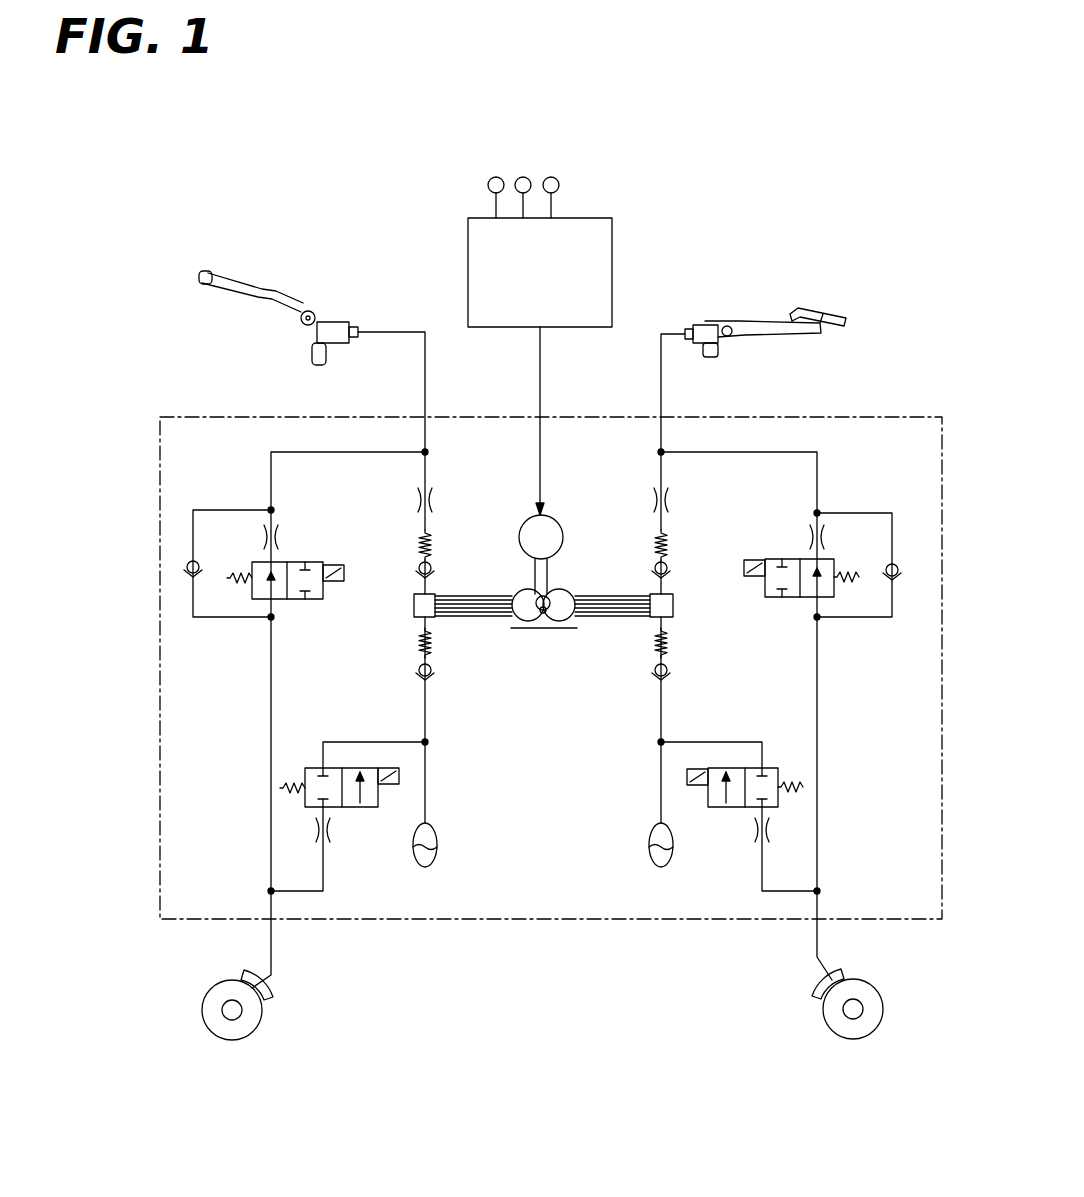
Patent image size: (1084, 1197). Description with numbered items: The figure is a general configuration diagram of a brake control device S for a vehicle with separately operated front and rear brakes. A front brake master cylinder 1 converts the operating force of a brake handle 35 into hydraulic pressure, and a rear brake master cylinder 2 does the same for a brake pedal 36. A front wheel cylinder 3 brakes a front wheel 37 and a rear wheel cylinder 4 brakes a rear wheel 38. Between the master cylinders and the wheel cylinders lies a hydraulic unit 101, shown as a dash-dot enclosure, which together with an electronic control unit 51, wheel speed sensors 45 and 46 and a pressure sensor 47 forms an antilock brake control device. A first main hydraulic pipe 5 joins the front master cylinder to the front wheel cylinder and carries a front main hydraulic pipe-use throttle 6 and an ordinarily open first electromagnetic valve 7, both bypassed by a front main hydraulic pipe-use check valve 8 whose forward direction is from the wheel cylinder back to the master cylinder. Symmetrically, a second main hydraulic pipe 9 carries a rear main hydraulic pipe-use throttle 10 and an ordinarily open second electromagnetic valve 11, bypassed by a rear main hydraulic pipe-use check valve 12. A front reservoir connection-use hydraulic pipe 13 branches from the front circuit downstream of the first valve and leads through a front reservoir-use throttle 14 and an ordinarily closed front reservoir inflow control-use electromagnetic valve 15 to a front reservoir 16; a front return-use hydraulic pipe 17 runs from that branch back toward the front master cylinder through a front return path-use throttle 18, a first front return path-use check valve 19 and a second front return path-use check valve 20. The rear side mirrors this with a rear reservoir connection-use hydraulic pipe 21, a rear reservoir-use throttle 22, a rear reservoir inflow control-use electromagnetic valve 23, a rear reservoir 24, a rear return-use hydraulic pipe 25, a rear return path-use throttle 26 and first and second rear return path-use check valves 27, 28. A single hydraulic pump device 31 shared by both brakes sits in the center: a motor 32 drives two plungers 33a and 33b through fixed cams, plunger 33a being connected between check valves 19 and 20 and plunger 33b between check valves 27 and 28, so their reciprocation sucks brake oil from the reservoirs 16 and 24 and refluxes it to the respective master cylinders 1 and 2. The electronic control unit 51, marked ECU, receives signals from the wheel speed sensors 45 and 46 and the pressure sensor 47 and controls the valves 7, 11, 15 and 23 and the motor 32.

The brake control device S is at (172, 352).
The hydraulic unit 101 is at (895, 417).
The front brake master cylinder 1 is at (338, 322).
The rear brake master cylinder 2 is at (700, 325).
The front wheel cylinder 3 is at (272, 1003).
The rear wheel cylinder 4 is at (813, 994).
The first main hydraulic pipe 5 is at (268, 709).
The front main hydraulic pipe-use throttle 6 is at (281, 540).
The first electromagnetic valve 7 is at (283, 600).
The front main hydraulic pipe-use check valve 8 is at (190, 560).
The second main hydraulic pipe 9 is at (820, 705).
The rear main hydraulic pipe-use throttle 10 is at (808, 538).
The second electromagnetic valve 11 is at (801, 598).
The rear main hydraulic pipe-use check valve 12 is at (895, 562).
The front reservoir connection-use hydraulic pipe 13 is at (338, 742).
The front reservoir-use throttle 14 is at (336, 828).
The front reservoir inflow control-use electromagnetic valve 15 is at (313, 768).
The front reservoir 16 is at (440, 843).
The front return-use hydraulic pipe 17 is at (427, 709).
The front return path-use throttle 18 is at (418, 500).
The first front return path-use check valve 19 is at (418, 565).
The second front return path-use check valve 20 is at (418, 668).
The rear reservoir connection-use hydraulic pipe 21 is at (713, 742).
The rear reservoir-use throttle 22 is at (753, 832).
The rear reservoir inflow control-use electromagnetic valve 23 is at (772, 768).
The rear reservoir 24 is at (650, 845).
The rear return-use hydraulic pipe 25 is at (657, 710).
The rear return path-use throttle 26 is at (652, 500).
The first rear return path-use check valve 27 is at (668, 565).
The second rear return path-use check valve 28 is at (652, 668).
The hydraulic pump device 31 is at (503, 520).
The motor 32 is at (557, 518).
The plunger 33a is at (468, 595).
The plunger 33b is at (600, 595).
The brake handle 35 is at (248, 290).
The brake pedal 36 is at (835, 318).
The front wheel 37 is at (204, 1003).
The rear wheel 38 is at (884, 1005).
The wheel speed sensor 45 is at (491, 177).
The wheel speed sensor 46 is at (521, 177).
The pressure sensor 47 is at (549, 177).
The electronic control unit 51 is at (614, 228).